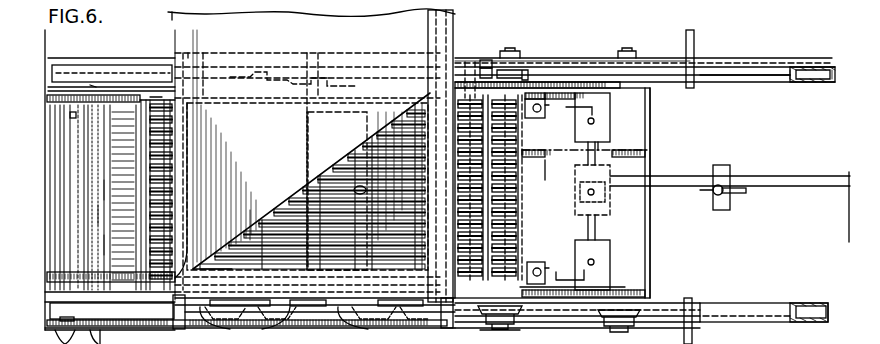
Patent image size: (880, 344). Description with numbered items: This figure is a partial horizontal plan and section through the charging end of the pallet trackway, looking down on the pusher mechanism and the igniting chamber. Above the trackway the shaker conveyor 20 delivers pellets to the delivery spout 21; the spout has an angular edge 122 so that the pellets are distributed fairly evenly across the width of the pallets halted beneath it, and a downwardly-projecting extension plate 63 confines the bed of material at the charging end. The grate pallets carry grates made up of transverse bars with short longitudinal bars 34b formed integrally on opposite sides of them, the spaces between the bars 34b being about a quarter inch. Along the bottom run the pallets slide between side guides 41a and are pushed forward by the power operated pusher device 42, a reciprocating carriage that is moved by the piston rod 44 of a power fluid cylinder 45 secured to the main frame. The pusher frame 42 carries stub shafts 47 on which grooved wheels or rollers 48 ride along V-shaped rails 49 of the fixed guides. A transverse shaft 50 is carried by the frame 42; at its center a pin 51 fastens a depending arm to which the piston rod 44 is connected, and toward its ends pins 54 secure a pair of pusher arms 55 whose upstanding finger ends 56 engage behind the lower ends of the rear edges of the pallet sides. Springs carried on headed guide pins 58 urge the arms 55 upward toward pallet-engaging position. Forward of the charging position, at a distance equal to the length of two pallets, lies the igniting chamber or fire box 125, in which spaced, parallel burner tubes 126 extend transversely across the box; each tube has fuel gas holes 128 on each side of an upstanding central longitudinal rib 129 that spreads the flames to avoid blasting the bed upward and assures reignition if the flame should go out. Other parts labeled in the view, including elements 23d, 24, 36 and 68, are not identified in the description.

The shaker conveyor 20 is at (172, 15).
The delivery spout 21 is at (420, 158).
The supporting rail 23d is at (768, 63).
The conveyor 24 is at (156, 96).
The short longitudinal bars 34b is at (250, 208).
The drive bracket 36 is at (252, 310).
The side guides 41a is at (94, 86).
The pusher device 42 is at (650, 267).
The piston rod 44 is at (668, 188).
The power fluid cylinder 45 is at (774, 212).
The stub shafts 47 is at (514, 46).
The grooved wheels 48 is at (488, 66).
The V-shaped rails 49 is at (564, 58).
The transverse shaft 50 is at (598, 147).
The pin 51 is at (588, 193).
The pins 54 is at (592, 121).
The pusher arms 55 is at (570, 107).
The finger ends 56 is at (526, 119).
The headed guide pins 58 is at (548, 164).
The extension plate 63 is at (360, 190).
The support post 68 is at (188, 51).
The angular edge 122 is at (264, 178).
The igniting chamber 125 is at (74, 112).
The burner tubes 126 is at (106, 188).
The fuel gas holes 128 is at (103, 244).
The central longitudinal rib 129 is at (101, 216).